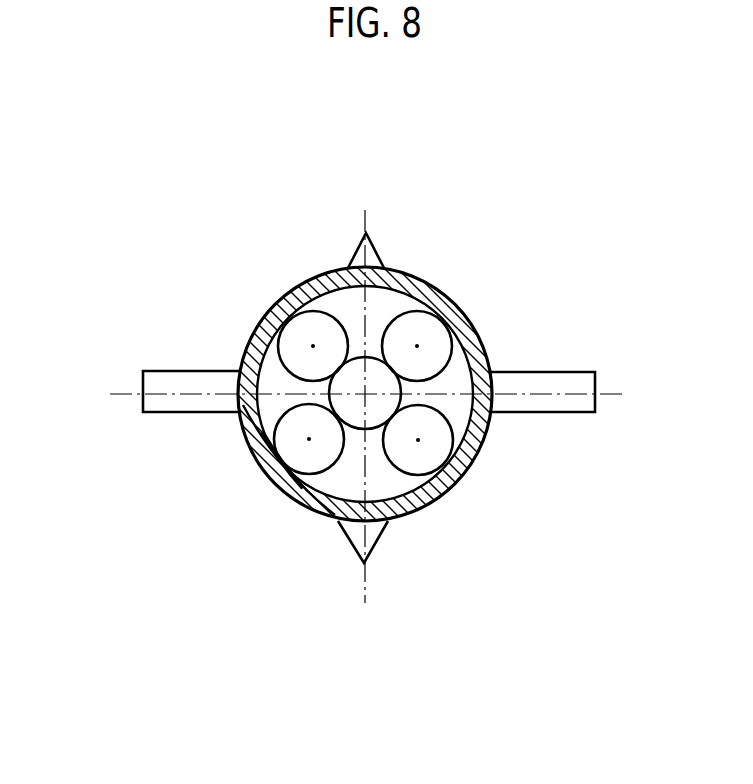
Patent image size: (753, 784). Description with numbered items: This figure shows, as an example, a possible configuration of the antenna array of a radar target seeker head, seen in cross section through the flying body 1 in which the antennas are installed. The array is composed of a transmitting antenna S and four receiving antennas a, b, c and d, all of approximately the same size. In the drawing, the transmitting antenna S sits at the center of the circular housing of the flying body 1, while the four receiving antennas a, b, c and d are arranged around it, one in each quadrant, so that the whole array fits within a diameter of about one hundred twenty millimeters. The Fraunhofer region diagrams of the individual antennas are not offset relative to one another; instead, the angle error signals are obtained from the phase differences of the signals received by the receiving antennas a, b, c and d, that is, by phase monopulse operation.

The flying body 1 is at (400, 273).
The receiving antenna a is at (430, 292).
The receiving antenna b is at (430, 480).
The receiving antenna c is at (283, 408).
The receiving antenna d is at (298, 307).
The transmitting antenna S is at (367, 433).